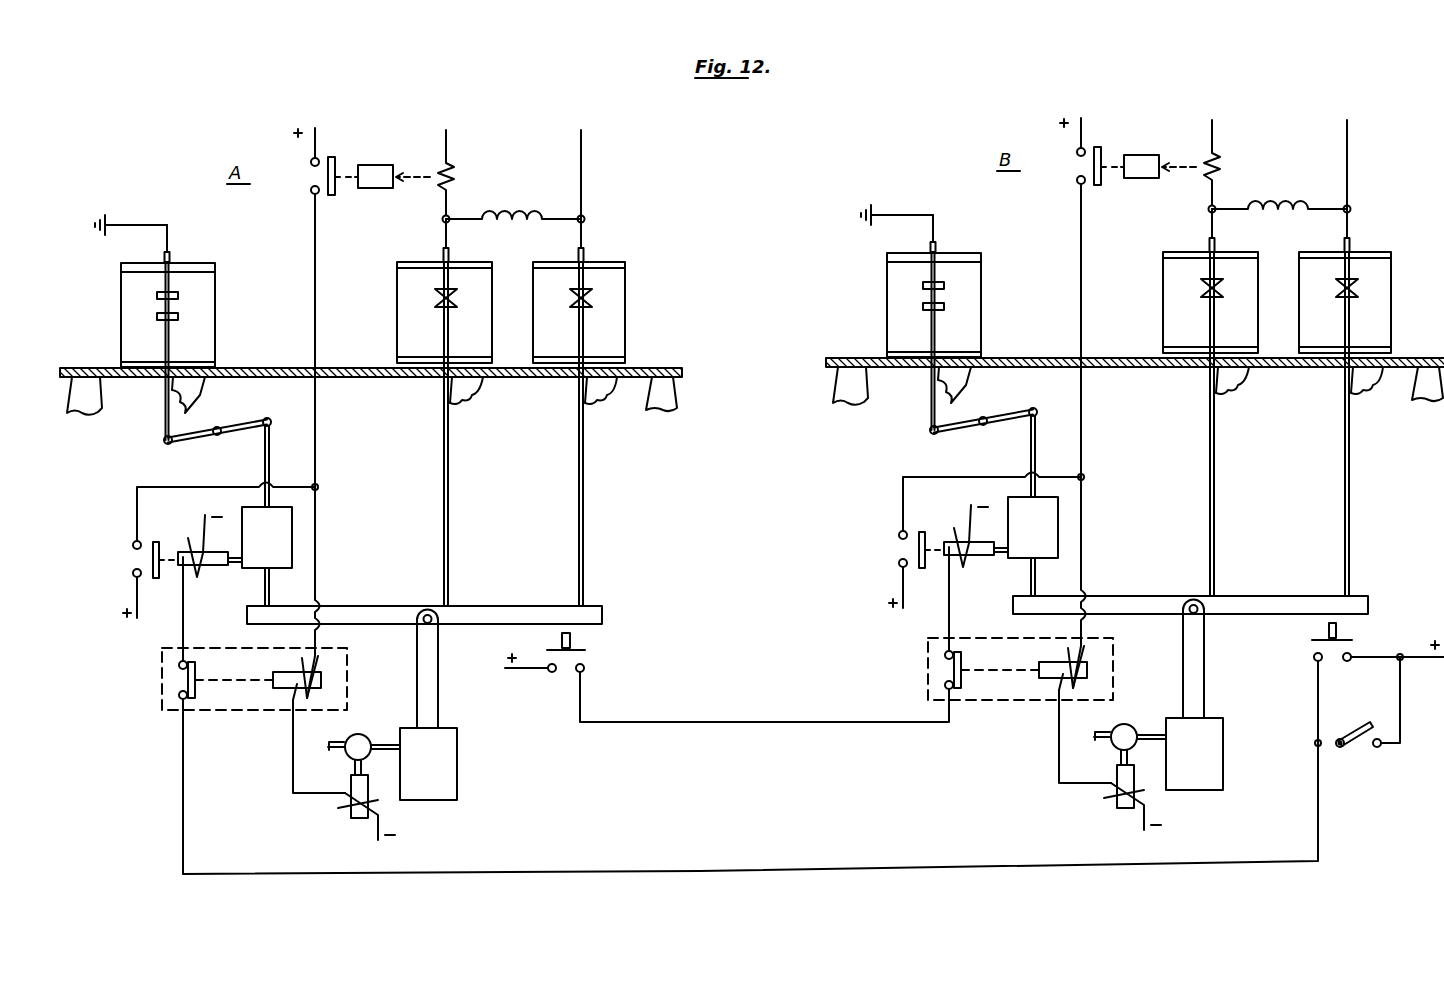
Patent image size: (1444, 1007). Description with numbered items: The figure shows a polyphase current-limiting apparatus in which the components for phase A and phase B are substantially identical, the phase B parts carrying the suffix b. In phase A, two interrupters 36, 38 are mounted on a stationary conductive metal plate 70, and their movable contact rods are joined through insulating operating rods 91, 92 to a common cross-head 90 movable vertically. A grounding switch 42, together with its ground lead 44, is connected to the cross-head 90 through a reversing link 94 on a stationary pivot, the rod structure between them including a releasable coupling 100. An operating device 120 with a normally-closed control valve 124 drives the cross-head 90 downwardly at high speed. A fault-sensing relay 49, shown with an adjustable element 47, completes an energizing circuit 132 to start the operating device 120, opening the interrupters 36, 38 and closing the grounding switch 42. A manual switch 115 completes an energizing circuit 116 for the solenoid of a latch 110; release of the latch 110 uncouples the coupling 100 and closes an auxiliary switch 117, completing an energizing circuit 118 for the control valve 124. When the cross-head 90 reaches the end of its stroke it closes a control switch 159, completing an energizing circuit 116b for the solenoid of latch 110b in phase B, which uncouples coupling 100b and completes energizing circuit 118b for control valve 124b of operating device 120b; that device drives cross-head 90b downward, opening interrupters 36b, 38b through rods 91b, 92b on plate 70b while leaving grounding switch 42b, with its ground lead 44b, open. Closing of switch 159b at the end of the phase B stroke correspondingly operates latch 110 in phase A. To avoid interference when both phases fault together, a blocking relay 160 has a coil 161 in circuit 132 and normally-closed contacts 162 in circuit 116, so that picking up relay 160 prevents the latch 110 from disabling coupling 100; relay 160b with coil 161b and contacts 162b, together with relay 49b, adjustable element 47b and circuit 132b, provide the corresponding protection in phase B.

The interrupter 36 is at (390, 308).
The interrupter 38 is at (659, 306).
The grounding switch 42 is at (114, 308).
The ground lead 44 is at (138, 221).
The variable resistor 47 is at (447, 172).
The relay 49 is at (372, 164).
The stationary conductive metal plate 70 is at (375, 378).
The cross-head 90 is at (497, 606).
The insulating operating rod 91 is at (449, 490).
The insulating operating rod 92 is at (584, 490).
The reversing link 94 is at (218, 436).
The releasable coupling 100 is at (287, 533).
The latch 110 is at (203, 570).
The manual switch 115 is at (1357, 738).
The energizing circuit 116 is at (692, 868).
The energizing circuit 116b is at (770, 725).
The auxiliary switch 117 is at (133, 562).
The energizing circuit 118 is at (136, 509).
The operating device 120 is at (447, 766).
The control valve 124 is at (363, 732).
The energizing circuit 132 is at (312, 263).
The control switch 159 is at (562, 672).
The blocking relay 160 is at (248, 713).
The relay coil 161 is at (322, 678).
The normally-closed contacts 162 is at (178, 678).
The interrupter 36b is at (1186, 281).
The interrupter 38b is at (1369, 236).
The grounding switch 42b is at (911, 322).
The ground lead 44b is at (900, 197).
The variable resistor 47b is at (1235, 162).
The relay 49b is at (1160, 149).
The stationary conductive metal plate 70b is at (1135, 381).
The cross-head 90b is at (1190, 578).
The insulating operating rod 91b is at (1238, 474).
The insulating operating rod 92b is at (1375, 474).
The releasable coupling 100b is at (1075, 546).
The latch 110b is at (986, 578).
The energizing circuit 118b is at (960, 541).
The operating device 120b is at (1226, 695).
The control valve 124b is at (1132, 756).
The energizing circuit 132b is at (1066, 403).
The control switch 159b is at (1330, 655).
The blocking relay 160b is at (1020, 692).
The relay coil 161b is at (1105, 710).
The normally-closed contacts 162b is at (948, 670).